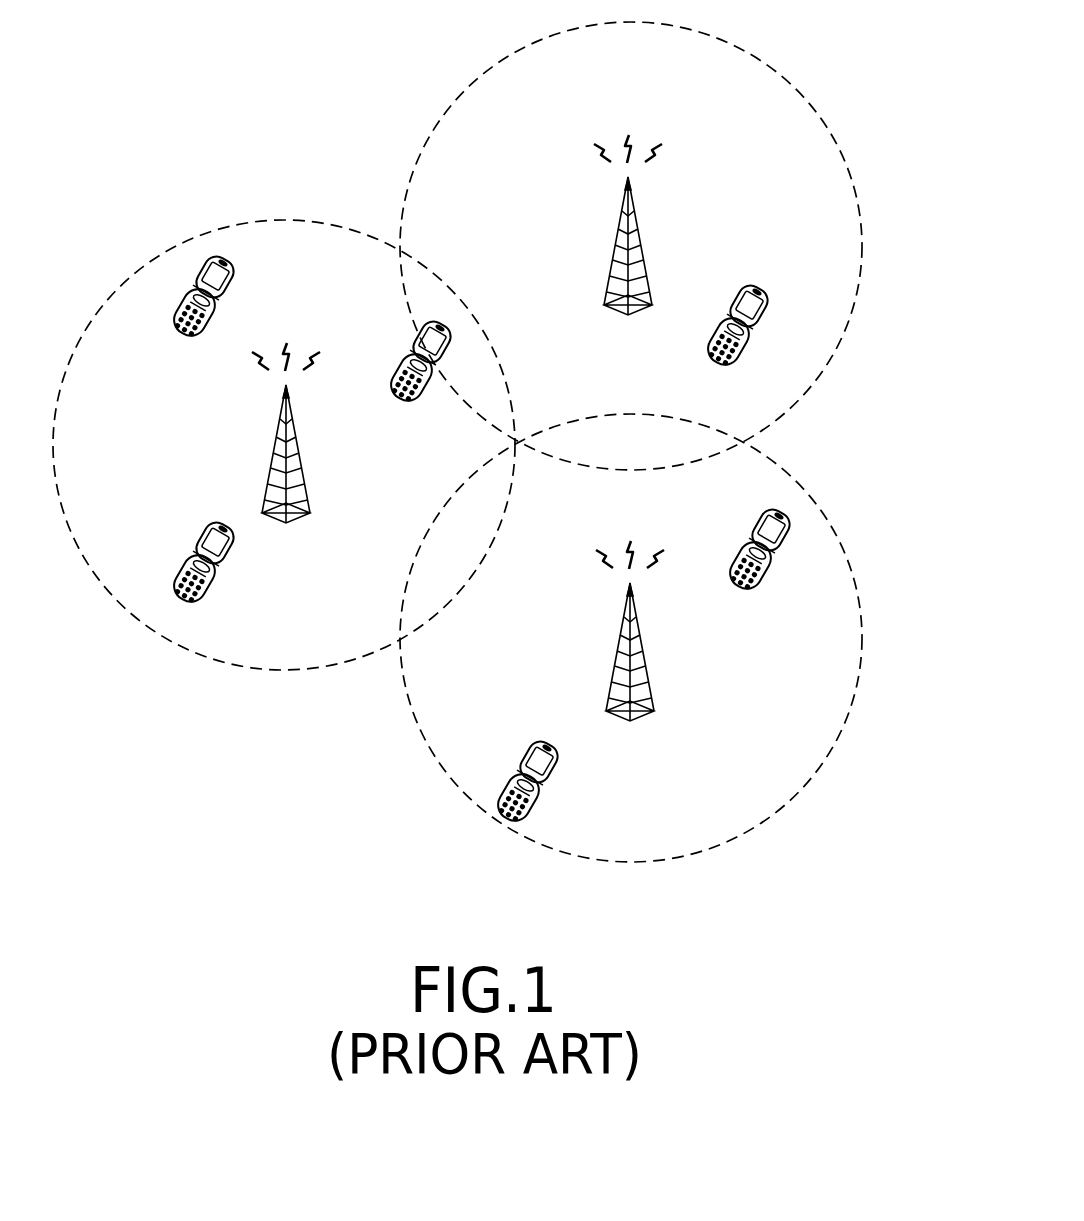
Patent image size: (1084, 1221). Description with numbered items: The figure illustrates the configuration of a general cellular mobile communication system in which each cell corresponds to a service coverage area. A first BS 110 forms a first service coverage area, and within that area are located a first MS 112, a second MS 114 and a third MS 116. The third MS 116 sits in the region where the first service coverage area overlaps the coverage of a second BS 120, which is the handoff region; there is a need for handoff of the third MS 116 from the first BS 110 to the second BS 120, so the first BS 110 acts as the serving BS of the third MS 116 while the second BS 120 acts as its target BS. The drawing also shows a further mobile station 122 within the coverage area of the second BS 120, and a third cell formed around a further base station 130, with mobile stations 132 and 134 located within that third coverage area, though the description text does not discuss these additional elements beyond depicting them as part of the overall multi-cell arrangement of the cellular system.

The first BS 110 is at (303, 454).
The first MS 112 is at (226, 307).
The second MS 114 is at (226, 574).
The third MS 116 is at (445, 371).
The second BS 120 is at (645, 252).
The mobile station MS4 122 is at (761, 341).
The base station 3 130 is at (648, 659).
The mobile station MS5 132 is at (785, 555).
The mobile station MS6 134 is at (551, 795).